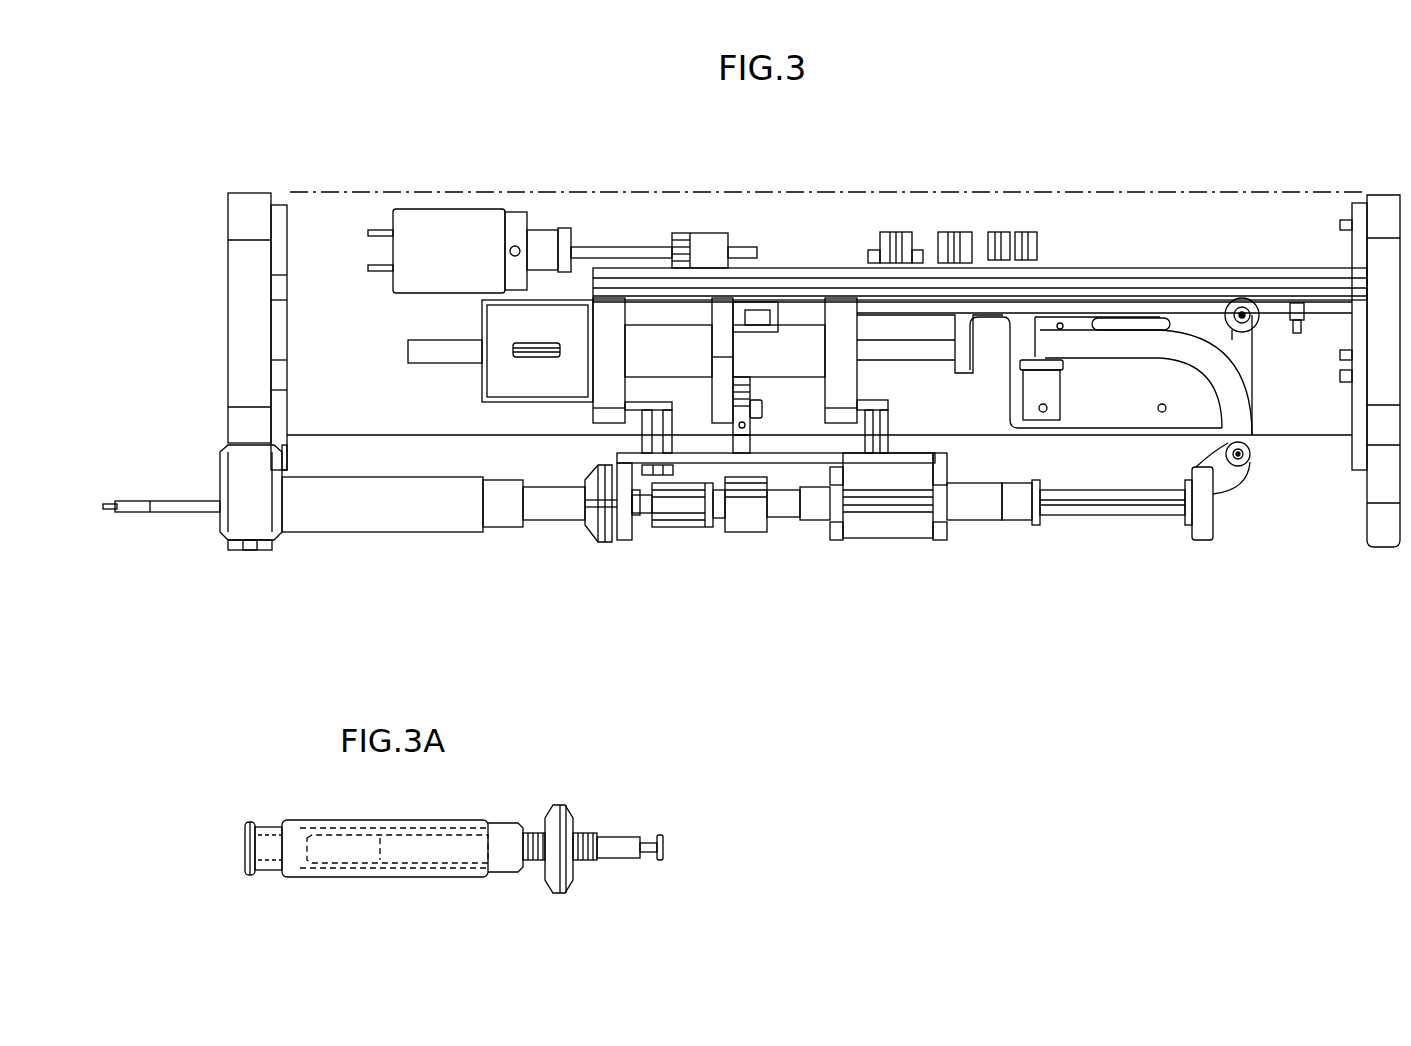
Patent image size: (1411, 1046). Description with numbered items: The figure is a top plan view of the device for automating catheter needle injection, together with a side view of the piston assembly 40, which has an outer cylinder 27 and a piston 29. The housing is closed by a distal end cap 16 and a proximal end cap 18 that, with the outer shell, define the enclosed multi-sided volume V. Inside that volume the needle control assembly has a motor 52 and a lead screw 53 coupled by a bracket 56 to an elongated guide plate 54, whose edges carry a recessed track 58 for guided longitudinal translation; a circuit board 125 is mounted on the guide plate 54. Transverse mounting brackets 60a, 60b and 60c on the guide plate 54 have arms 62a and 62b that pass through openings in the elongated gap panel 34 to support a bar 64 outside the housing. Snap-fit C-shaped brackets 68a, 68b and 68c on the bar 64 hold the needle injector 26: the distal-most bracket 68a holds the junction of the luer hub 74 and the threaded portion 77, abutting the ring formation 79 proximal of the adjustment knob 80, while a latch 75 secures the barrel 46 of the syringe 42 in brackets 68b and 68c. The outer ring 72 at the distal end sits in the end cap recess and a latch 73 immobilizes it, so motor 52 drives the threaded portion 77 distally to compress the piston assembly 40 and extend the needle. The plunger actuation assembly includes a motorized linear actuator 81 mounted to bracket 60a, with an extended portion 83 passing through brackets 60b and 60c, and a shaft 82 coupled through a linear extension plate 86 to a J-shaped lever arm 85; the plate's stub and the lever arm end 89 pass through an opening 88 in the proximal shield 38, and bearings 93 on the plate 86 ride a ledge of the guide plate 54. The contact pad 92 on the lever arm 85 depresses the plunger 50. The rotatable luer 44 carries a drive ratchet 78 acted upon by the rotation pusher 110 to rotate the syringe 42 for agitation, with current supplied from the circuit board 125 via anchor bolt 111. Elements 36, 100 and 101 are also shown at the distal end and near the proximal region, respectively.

In FIG. 3, the distal end cap 16 is at (255, 205).
In FIG. 3, the proximal end cap 18 is at (1390, 200).
In FIG. 3, the enclosed multi-sided volume V is at (885, 205).
In FIG. 3, the proximal shield 38 is at (1318, 435).
In FIG. 3, the motor 52 is at (455, 225).
In FIG. 3, the lead screw 53 is at (620, 250).
In FIG. 3, the bracket 56 is at (710, 235).
In FIG. 3, the elongated guide plate 54 is at (778, 265).
In FIG. 3, the recessed track 58 is at (1200, 290).
In FIG. 3, the circuit board 125 is at (1062, 265).
In FIG. 3, the transverse mounting bracket 60a is at (607, 332).
In FIG. 3, the transverse mounting bracket 60b is at (722, 318).
In FIG. 3, the transverse mounting bracket 60c is at (843, 335).
In FIG. 3, the extended portion 83 is at (680, 367).
In FIG. 3, the rotation pusher 110 is at (743, 445).
In FIG. 3, the motorized linear actuator 81 is at (495, 325).
In FIG. 3, the shaft 82 is at (440, 352).
In FIG. 3, the arm 62a is at (633, 412).
In FIG. 3, the arm 62b is at (878, 413).
In FIG. 3, the mounting bracket 101 is at (1050, 338).
In FIG. 3, the linear extension plate 86 is at (1098, 411).
In FIG. 3, the lever arm 85 is at (1232, 383).
In FIG. 3, the stop block 100 is at (1043, 388).
In FIG. 3, the bearings 93 is at (1242, 298).
In FIG. 3, the anchor bolt 111 is at (1297, 300).
In FIG. 3, the latch 73 is at (238, 488).
In FIG. 3, the needle 36 is at (327, 440).
In FIG. 3, the needle injector 26 is at (449, 560).
In FIG. 3, the piston assembly 40 is at (372, 520).
In FIG. 3A, the piston assembly 40 is at (440, 878).
In FIG. 3, the elongated gap panel 34 is at (540, 495).
In FIG. 3, the knob 80 is at (598, 545).
In FIG. 3A, the knob 80 is at (558, 808).
In FIG. 3, the threaded portion 77 is at (545, 520).
In FIG. 3A, the threaded portion 77 is at (586, 862).
In FIG. 3, the bar 64 is at (806, 462).
In FIG. 3, the C-shaped bracket 68a is at (625, 540).
In FIG. 3, the luer hub 74 is at (627, 505).
In FIG. 3A, the luer hub 74 is at (625, 835).
In FIG. 3, the luer 44 is at (682, 517).
In FIG. 3, the drive ratchet 78 is at (742, 520).
In FIG. 3, the C-shaped bracket 68b is at (836, 540).
In FIG. 3, the latch 75 is at (912, 522).
In FIG. 3, the C-shaped bracket 68c is at (943, 535).
In FIG. 3, the barrel 46 is at (985, 512).
In FIG. 3, the syringe 42 is at (1015, 512).
In FIG. 3, the plunger 50 is at (1115, 510).
In FIG. 3, the contact pad 92 is at (1198, 525).
In FIG. 3, the end of the lever arm 89 is at (1222, 475).
In FIG. 3, the opening 88 is at (1250, 456).
In FIG. 3A, the outer ring 72 is at (250, 820).
In FIG. 3A, the cylinder 27 is at (348, 820).
In FIG. 3A, the piston 29 is at (420, 848).
In FIG. 3A, the ring formation 79 is at (598, 858).